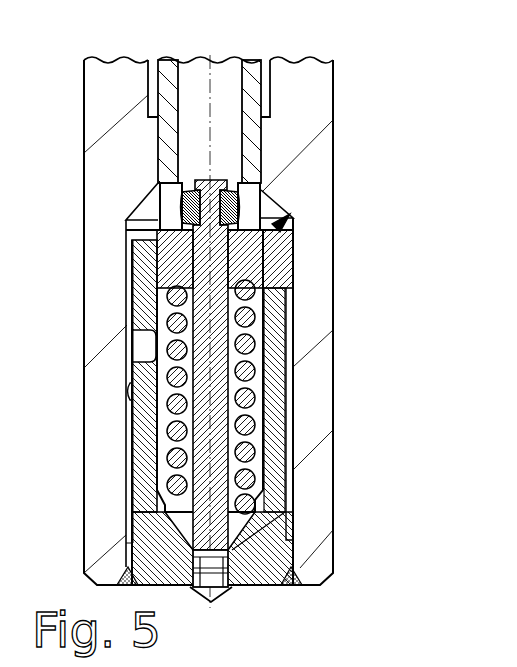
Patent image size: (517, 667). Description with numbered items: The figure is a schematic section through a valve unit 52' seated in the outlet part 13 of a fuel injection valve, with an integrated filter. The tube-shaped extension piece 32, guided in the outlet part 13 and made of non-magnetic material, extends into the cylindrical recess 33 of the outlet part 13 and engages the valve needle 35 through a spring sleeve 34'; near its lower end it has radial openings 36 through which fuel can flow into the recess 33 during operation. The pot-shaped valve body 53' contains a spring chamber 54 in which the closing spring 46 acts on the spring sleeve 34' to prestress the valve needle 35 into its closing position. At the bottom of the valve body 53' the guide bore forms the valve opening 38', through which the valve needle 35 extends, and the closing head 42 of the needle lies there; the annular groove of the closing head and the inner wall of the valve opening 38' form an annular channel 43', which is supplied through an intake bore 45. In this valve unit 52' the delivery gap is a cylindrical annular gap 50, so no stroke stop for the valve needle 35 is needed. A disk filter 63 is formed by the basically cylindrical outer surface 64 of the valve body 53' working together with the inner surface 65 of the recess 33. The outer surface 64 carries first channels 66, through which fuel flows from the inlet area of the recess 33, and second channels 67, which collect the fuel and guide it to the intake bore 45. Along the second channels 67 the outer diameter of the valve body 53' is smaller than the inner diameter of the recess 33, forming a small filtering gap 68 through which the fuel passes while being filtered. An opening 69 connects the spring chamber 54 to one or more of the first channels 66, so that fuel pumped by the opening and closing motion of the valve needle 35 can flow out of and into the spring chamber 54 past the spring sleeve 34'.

The outlet part 13 is at (115, 158).
The extension piece 32 is at (262, 60).
The cylindrical recess 33 is at (147, 232).
The spring sleeve 34' is at (273, 259).
The valve needle 35 is at (213, 272).
The radial openings 36 is at (172, 202).
The valve opening 38' is at (47, 8).
The closing head 42 is at (218, 602).
The annular channel 43' is at (203, 606).
The intake bore 45 is at (288, 590).
The closing spring 46 is at (258, 302).
The cylindrical annular gap 50 is at (240, 570).
The valve unit 52' is at (328, 186).
The valve body 53' is at (87, 402).
The spring chamber 54 is at (252, 352).
The disk filter 63 is at (300, 417).
The outer surface 64 is at (135, 457).
The inner surface 65 is at (137, 392).
The first channels 66 is at (130, 303).
The second channels 67 is at (288, 498).
The filtering gap 68 is at (292, 452).
The opening 69 is at (145, 350).